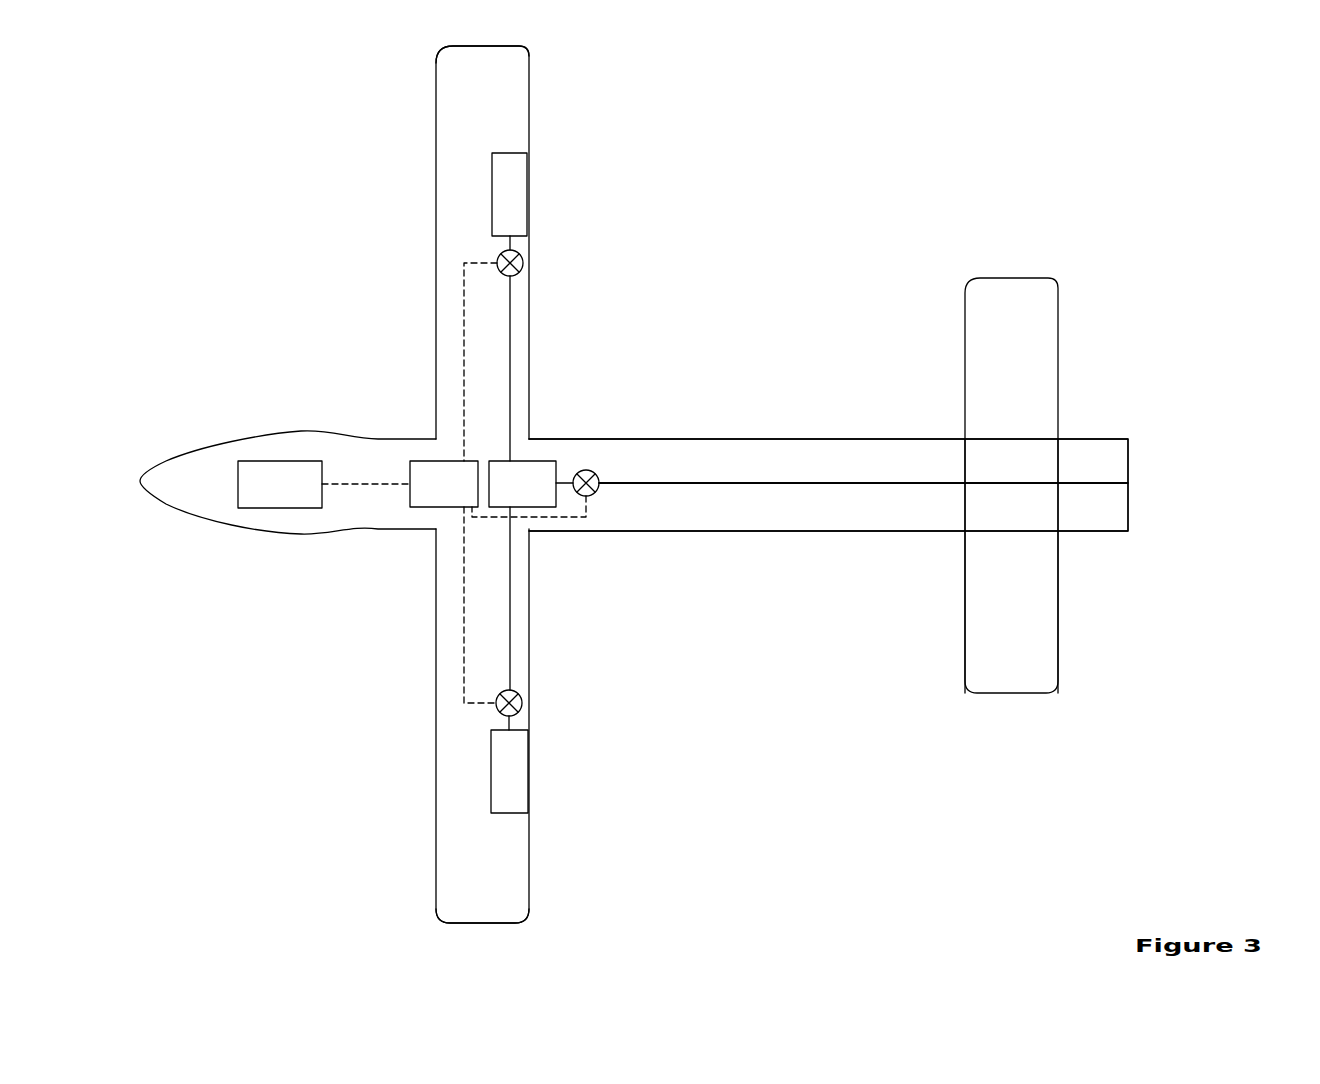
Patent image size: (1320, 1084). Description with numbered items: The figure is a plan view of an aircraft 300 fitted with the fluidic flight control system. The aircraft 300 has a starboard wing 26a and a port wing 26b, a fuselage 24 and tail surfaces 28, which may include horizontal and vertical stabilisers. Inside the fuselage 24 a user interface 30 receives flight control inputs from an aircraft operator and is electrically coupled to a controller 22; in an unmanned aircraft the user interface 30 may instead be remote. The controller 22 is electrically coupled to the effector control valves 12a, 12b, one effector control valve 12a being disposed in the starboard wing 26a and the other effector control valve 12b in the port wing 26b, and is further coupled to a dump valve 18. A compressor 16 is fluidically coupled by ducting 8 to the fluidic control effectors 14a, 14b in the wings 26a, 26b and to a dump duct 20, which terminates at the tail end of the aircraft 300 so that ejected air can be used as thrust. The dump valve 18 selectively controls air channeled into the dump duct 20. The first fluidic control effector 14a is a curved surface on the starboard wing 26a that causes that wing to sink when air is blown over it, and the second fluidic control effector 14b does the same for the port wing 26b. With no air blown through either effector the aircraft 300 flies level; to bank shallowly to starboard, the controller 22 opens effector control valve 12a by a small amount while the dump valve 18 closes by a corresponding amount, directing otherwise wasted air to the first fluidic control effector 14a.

The aircraft 300 is at (228, 195).
The starboard wing 26a is at (528, 88).
The port wing 26b is at (528, 862).
The first fluidic control effector 14a is at (513, 190).
The second fluidic control effector 14b is at (513, 762).
The effector control valve 12a is at (528, 255).
The effector control valve 12b is at (527, 696).
The ducting 8 is at (510, 342).
The user interface 30 is at (255, 460).
The controller 22 is at (427, 460).
The compressor 16 is at (547, 460).
The dump valve 18 is at (598, 472).
The dump duct 20 is at (927, 480).
The fuselage 24 is at (733, 530).
The tail surfaces 28 is at (1030, 277).